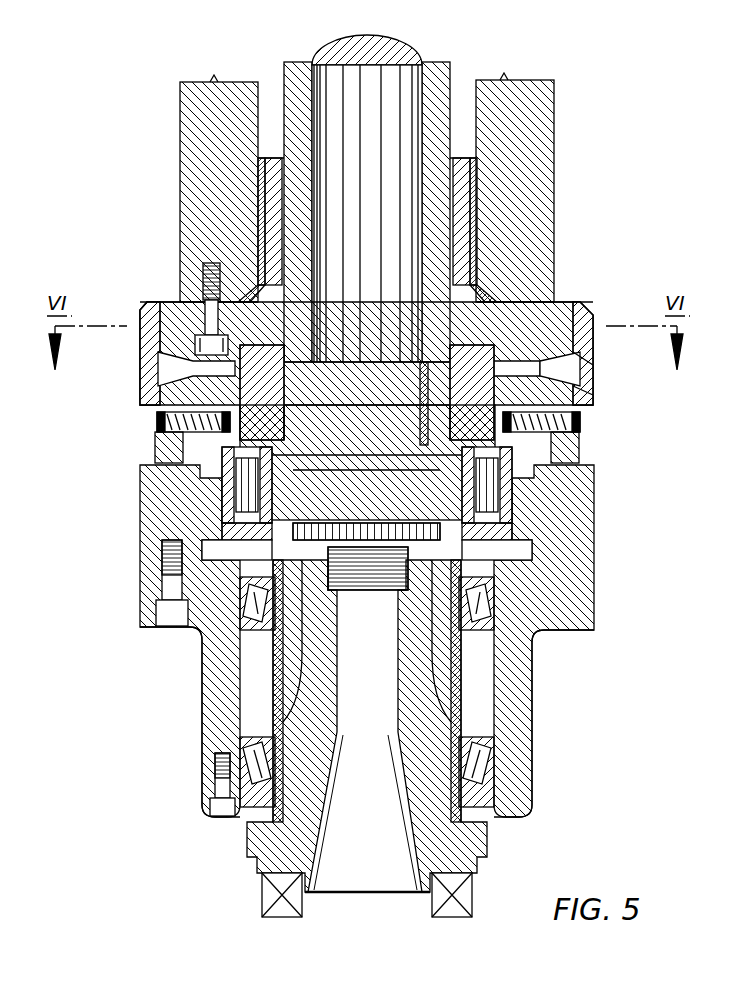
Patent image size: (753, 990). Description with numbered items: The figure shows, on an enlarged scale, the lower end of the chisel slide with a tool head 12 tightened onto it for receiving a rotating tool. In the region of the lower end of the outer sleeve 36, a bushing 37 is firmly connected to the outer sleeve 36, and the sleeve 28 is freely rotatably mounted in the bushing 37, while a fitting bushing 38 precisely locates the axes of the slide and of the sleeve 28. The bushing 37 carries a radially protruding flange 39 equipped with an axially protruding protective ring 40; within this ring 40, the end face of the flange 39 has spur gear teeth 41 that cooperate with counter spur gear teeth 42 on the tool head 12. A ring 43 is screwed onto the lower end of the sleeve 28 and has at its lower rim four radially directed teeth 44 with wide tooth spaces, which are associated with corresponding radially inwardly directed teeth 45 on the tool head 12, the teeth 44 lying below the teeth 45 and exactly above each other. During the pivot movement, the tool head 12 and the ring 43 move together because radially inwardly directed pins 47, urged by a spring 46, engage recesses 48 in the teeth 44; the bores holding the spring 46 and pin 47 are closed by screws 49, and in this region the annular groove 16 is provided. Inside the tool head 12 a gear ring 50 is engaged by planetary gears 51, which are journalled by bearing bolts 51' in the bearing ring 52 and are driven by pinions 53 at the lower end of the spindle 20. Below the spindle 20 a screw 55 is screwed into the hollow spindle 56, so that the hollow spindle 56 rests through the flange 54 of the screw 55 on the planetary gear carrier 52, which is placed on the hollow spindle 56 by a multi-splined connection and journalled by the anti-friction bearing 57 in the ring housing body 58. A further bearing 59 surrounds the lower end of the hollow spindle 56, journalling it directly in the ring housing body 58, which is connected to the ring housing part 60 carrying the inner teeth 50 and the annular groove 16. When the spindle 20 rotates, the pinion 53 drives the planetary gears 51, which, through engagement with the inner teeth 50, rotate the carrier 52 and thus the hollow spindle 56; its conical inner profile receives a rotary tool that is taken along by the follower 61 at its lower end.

The tool head 12 is at (583, 676).
The annular groove 16 is at (608, 462).
The spindle 20 is at (438, 58).
The sleeve 28 is at (440, 102).
The outer sleeve 36 is at (520, 222).
The bushing 37 is at (462, 212).
The fitting bushing 38 is at (476, 185).
The flange 39 is at (560, 302).
The protective ring 40 is at (596, 320).
The spur gear teeth 41 is at (575, 357).
The counter spur gear teeth 42 is at (588, 378).
The ring 43 is at (470, 372).
The radially directed teeth 44 is at (480, 398).
The radially inwardly directed teeth 45 is at (424, 395).
The spring 46 is at (160, 445).
The pin 47 is at (487, 423).
The recess 48 is at (492, 448).
The screw 49 is at (165, 420).
The gear ring 50 is at (530, 497).
The planetary gears 51 is at (162, 641).
The bearing bolts 51' is at (367, 553).
The bearing ring 52 is at (215, 527).
The pinions 53 is at (500, 470).
The flange 54 is at (395, 540).
The screw 55 is at (380, 556).
The hollow spindle 56 is at (425, 800).
The anti-friction bearing 57 is at (240, 625).
The ring housing body 58 is at (220, 690).
The bearing 59 is at (245, 742).
The ring housing part 60 is at (575, 537).
The follower 61 is at (290, 917).